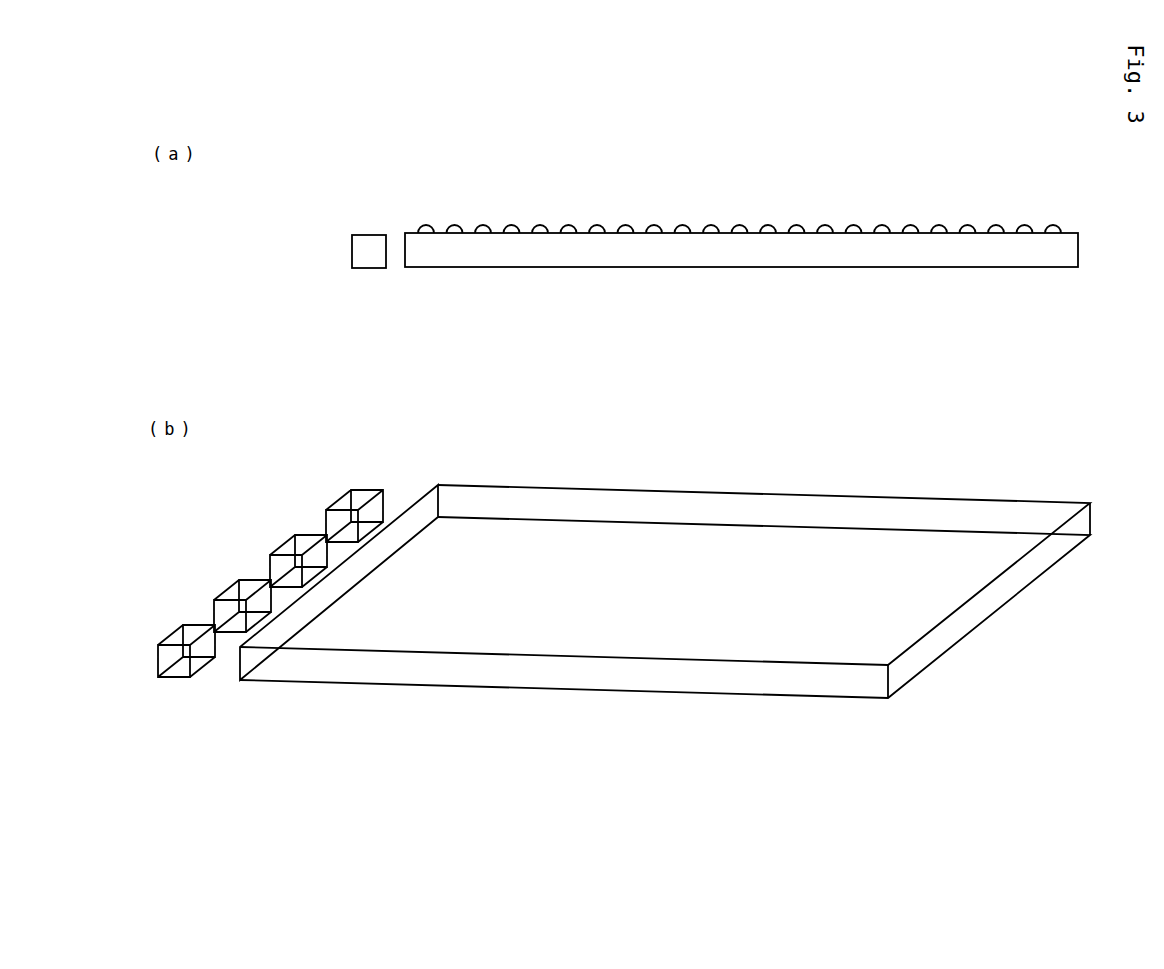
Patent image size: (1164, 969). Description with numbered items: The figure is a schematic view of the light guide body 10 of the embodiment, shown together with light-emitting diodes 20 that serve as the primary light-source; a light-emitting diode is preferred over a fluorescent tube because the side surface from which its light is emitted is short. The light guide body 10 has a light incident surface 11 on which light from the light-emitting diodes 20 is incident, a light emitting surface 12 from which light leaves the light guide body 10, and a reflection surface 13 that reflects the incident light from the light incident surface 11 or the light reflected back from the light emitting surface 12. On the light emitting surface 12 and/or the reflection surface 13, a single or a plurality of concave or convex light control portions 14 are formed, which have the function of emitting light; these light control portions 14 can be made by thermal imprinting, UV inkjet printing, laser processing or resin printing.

The light guide body 10 is at (1088, 290).
The light incident surface 11 is at (403, 508).
The light emitting surface 12 is at (910, 553).
The reflection surface 13 is at (813, 698).
The light control portion 14 is at (912, 228).
The light-emitting diode 20 is at (362, 253).